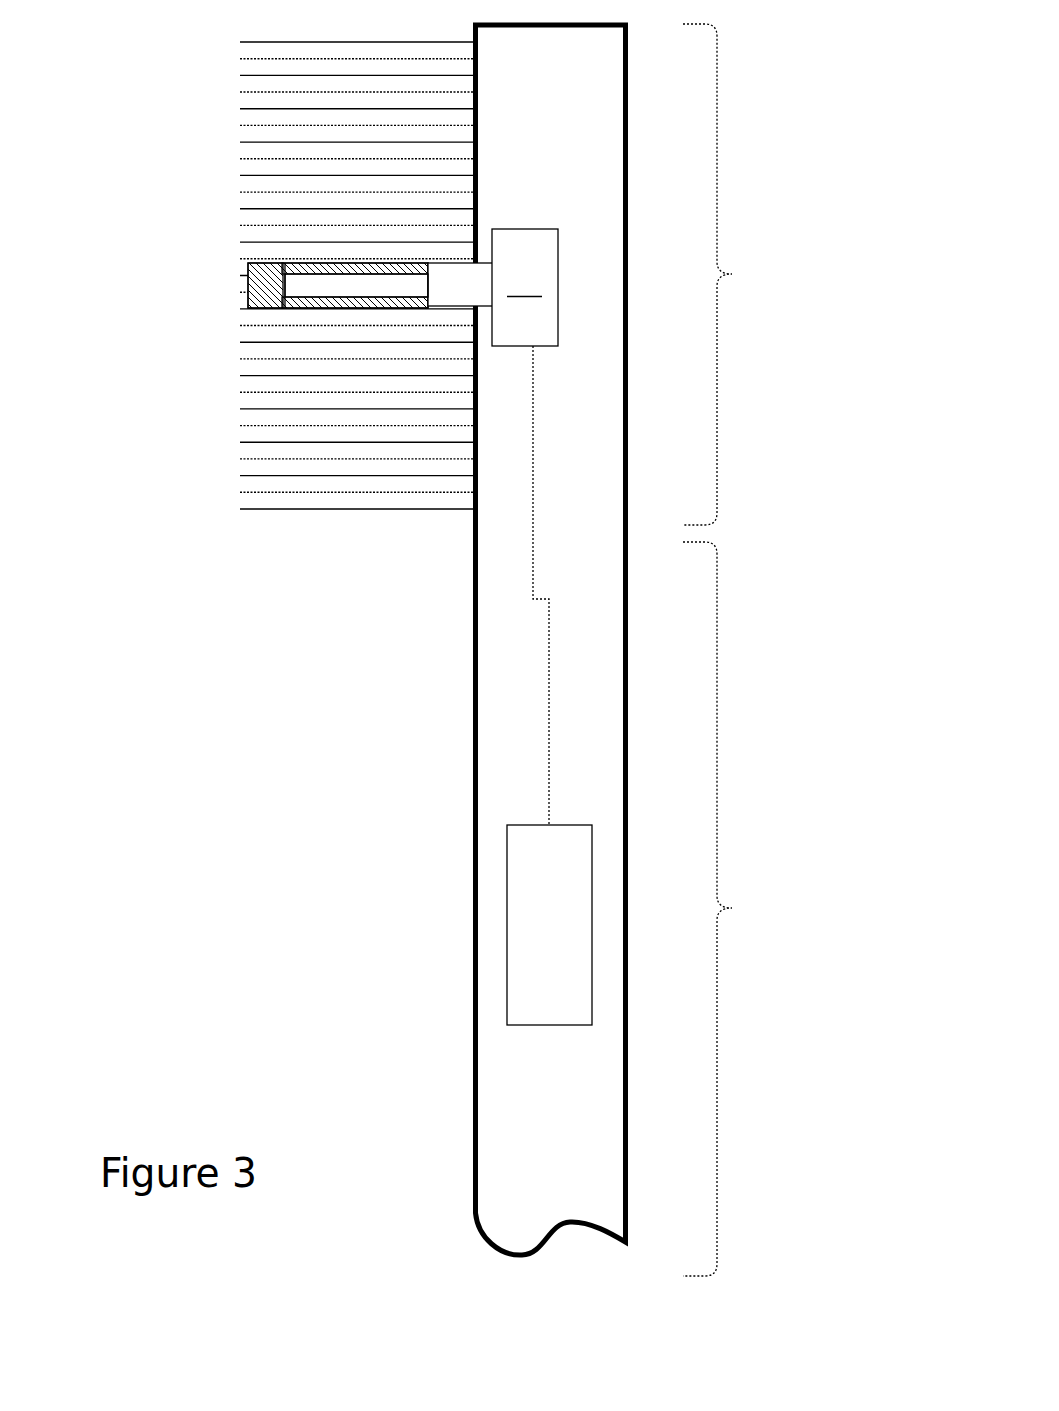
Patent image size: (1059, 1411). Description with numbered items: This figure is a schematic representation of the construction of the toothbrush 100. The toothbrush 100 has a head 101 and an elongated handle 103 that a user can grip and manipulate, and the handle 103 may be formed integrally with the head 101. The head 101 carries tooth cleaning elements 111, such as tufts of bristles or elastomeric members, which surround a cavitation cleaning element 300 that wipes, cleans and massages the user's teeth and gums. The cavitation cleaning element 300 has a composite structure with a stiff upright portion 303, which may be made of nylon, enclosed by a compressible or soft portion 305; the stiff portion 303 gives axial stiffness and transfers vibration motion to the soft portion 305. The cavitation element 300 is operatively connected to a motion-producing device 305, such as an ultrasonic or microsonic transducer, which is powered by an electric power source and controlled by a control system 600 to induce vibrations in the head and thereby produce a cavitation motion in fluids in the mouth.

The toothbrush 100 is at (759, 100).
The head 101 is at (752, 274).
The handle 103 is at (752, 909).
The tooth cleaning elements 111 is at (264, 514).
The cavitation cleaning element 300 is at (238, 280).
The stiff upright portion 303 is at (327, 281).
The soft portion 305 is at (255, 296).
The control system 600 is at (568, 936).